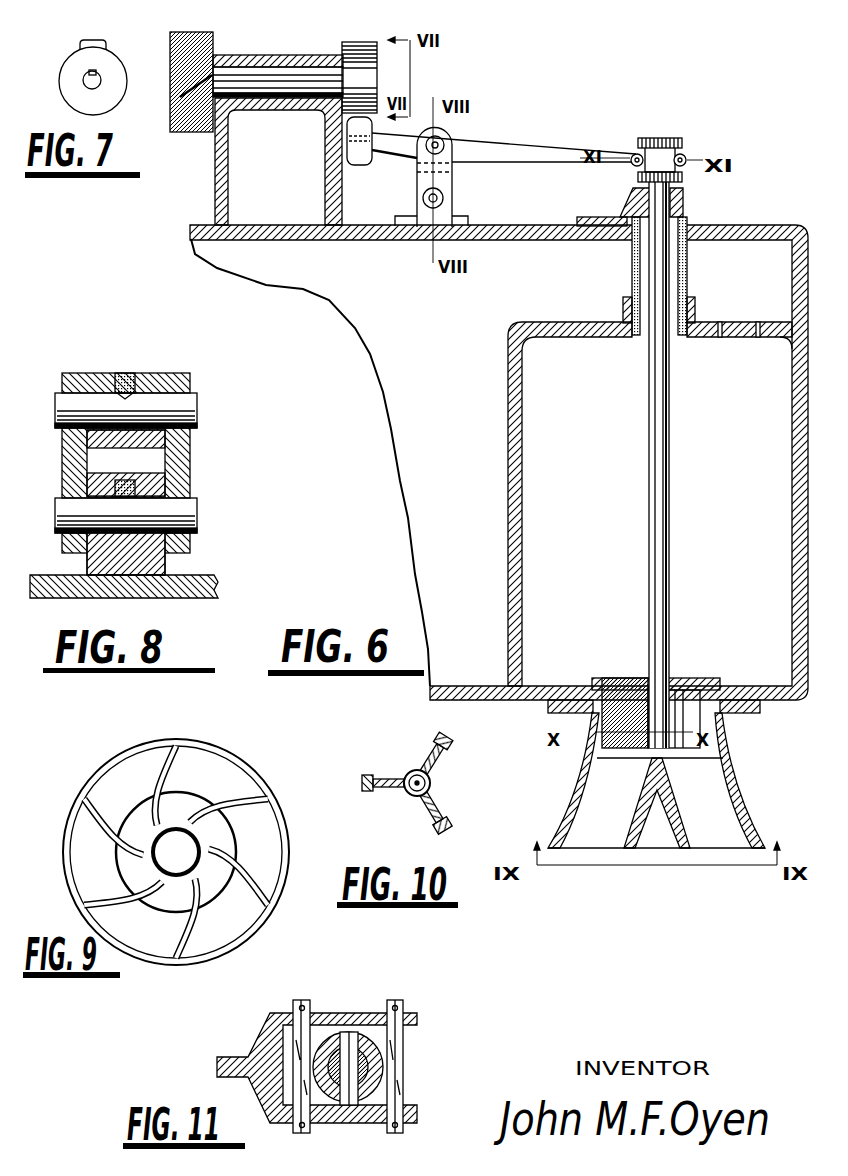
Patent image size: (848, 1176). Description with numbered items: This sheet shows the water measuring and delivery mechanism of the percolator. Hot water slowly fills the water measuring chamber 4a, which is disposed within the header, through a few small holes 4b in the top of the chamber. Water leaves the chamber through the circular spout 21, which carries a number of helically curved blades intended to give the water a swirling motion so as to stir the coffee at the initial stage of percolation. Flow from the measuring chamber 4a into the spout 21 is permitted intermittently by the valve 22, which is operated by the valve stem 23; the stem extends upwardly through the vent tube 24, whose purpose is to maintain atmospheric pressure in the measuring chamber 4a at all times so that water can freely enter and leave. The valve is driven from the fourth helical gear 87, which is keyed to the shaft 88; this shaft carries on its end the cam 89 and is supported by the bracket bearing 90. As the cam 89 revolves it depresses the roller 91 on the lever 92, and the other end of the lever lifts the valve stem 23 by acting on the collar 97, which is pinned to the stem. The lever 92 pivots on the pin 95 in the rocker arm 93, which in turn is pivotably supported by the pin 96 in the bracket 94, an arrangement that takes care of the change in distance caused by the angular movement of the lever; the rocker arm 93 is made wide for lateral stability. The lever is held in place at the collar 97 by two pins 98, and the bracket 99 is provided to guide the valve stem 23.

In FIG. 6, the water measuring chamber 4a is at (508, 380).
In FIG. 6, the small holes 4b is at (570, 300).
In FIG. 6, the circular spout 21 is at (743, 817).
In FIG. 9, the circular spout 21 is at (278, 880).
In FIG. 6, the valve 22 is at (630, 677).
In FIG. 10, the valve 22 is at (425, 805).
In FIG. 6, the valve stem 23 is at (653, 473).
In FIG. 11, the valve stem 23 is at (360, 1067).
In FIG. 6, the vent tube 24 is at (687, 282).
In FIG. 6, the fourth helical gear 87 is at (172, 40).
In FIG. 6, the shaft 88 is at (255, 77).
In FIG. 7, the cam 89 is at (112, 92).
In FIG. 6, the cam 89 is at (362, 43).
In FIG. 6, the bracket bearing 90 is at (242, 182).
In FIG. 6, the roller 91 is at (360, 167).
In FIG. 6, the lever 92 is at (508, 148).
In FIG. 8, the lever 92 is at (102, 375).
In FIG. 11, the lever 92 is at (248, 1056).
In FIG. 6, the rocker arm 93 is at (452, 182).
In FIG. 8, the rocker arm 93 is at (182, 473).
In FIG. 6, the bracket 94 is at (462, 222).
In FIG. 8, the bracket 94 is at (153, 567).
In FIG. 6, the pin 95 is at (442, 142).
In FIG. 8, the pin 95 is at (193, 407).
In FIG. 6, the pin 96 is at (424, 200).
In FIG. 8, the pin 96 is at (187, 513).
In FIG. 6, the collar 97 is at (680, 145).
In FIG. 11, the collar 97 is at (378, 1053).
In FIG. 6, the pins 98 is at (633, 166).
In FIG. 11, the pins 98 is at (395, 1000).
In FIG. 6, the bracket 99 is at (587, 214).